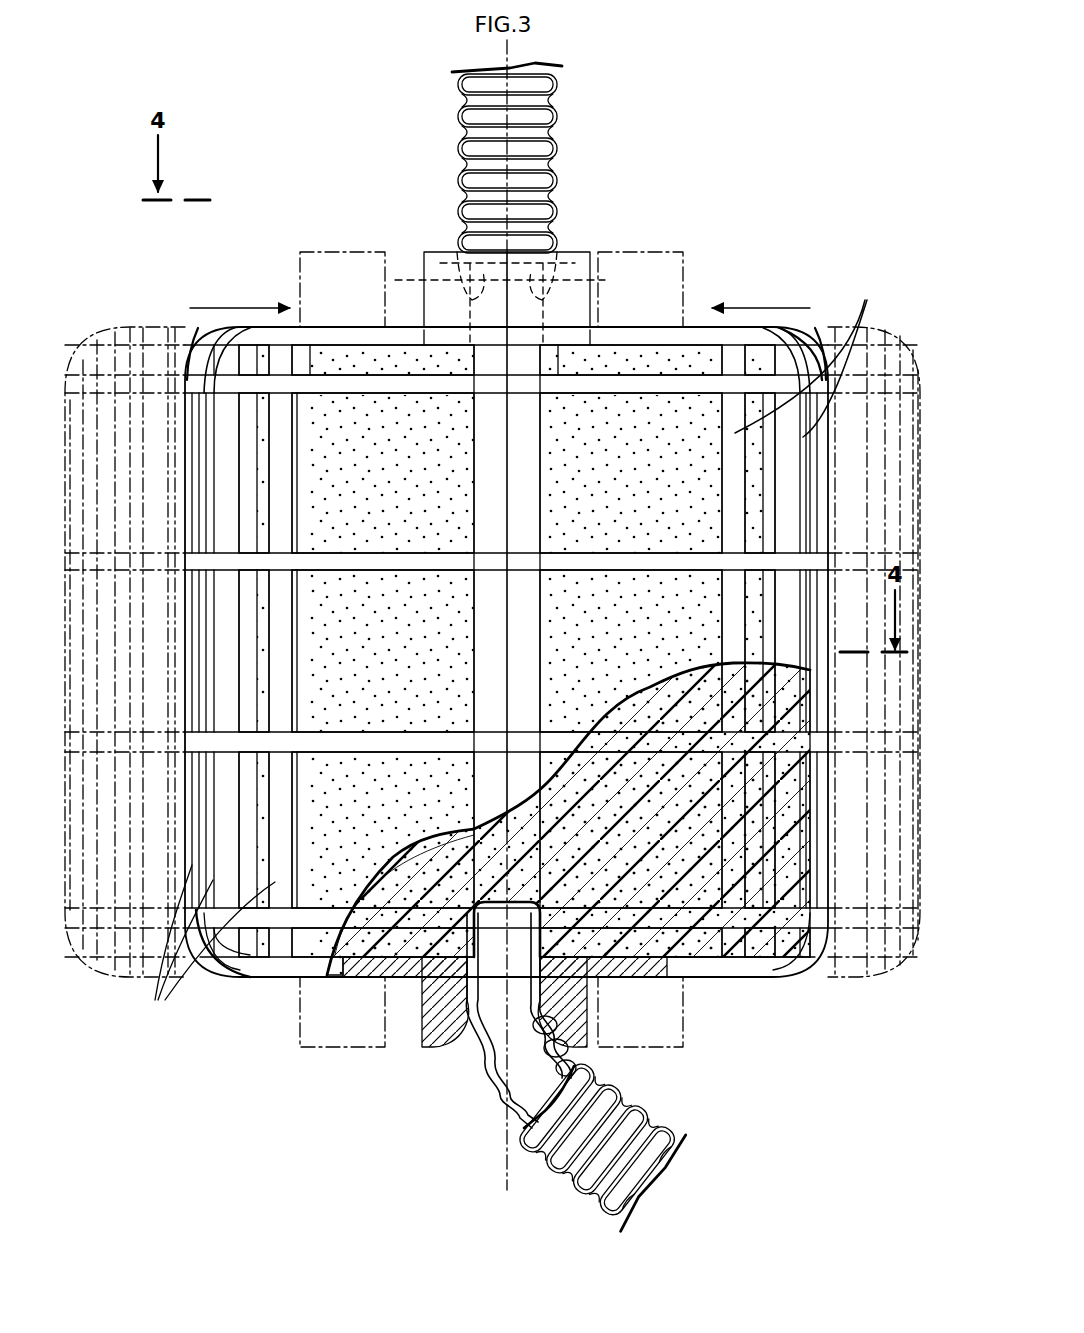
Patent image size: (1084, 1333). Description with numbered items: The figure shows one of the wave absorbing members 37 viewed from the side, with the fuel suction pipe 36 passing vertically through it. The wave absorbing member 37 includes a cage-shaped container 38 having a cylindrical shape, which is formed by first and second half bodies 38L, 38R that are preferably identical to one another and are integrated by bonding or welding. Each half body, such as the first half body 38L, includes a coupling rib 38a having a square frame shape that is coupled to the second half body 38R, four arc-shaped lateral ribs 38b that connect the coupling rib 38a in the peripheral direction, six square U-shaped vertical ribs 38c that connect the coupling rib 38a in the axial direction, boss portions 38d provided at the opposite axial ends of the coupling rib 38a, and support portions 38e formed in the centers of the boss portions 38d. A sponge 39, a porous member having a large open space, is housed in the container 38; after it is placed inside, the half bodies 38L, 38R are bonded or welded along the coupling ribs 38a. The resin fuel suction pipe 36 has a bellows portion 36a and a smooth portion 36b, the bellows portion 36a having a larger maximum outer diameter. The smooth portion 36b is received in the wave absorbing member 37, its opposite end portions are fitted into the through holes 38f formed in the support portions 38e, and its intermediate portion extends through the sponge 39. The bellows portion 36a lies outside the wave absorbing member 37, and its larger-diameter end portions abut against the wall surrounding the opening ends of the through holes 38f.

The fuel suction pipe 36 is at (516, 657).
The bellows portion 36a is at (560, 130).
The smooth portion 36b is at (474, 860).
The wave absorbing member 37 is at (752, 203).
The cage-shaped container 38 is at (650, 320).
The coupling rib 38a is at (487, 499).
The lateral ribs 38b is at (337, 393).
The vertical ribs 38c is at (513, 653).
The boss portions 38d is at (650, 982).
The support portions 38e is at (458, 268).
The through holes 38f is at (455, 1082).
The first half body 38L is at (334, 323).
The second half body 38R is at (691, 323).
The sponge 39 is at (673, 832).